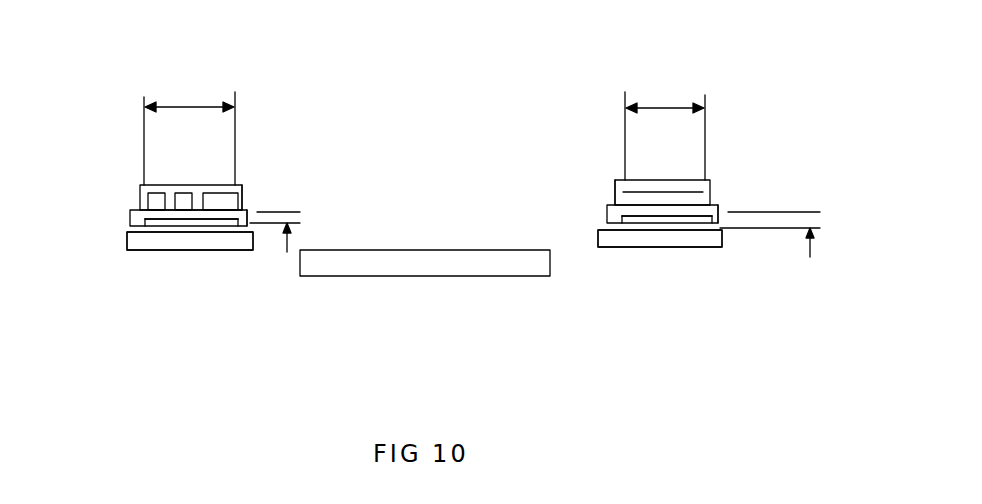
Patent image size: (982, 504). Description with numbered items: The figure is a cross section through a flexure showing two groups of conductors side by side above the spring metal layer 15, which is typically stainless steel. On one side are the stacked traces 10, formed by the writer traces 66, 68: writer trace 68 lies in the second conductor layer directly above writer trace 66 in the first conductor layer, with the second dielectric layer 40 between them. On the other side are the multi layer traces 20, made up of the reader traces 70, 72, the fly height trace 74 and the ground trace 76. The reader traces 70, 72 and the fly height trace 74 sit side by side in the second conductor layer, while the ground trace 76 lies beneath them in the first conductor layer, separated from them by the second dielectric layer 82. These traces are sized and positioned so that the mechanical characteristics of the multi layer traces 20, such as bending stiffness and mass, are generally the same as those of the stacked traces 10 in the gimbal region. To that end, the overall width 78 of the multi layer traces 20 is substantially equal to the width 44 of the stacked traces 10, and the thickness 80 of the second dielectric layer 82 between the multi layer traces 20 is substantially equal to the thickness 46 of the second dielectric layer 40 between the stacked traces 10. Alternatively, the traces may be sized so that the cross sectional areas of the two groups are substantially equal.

The stacked traces 10 is at (686, 224).
The spring metal layer 15 is at (420, 276).
The multi layer traces 20 is at (211, 228).
The second dielectric layer 40 is at (606, 210).
The width 44 is at (665, 108).
The gimbal section thickness 46 is at (810, 212).
The writer trace 66 is at (662, 212).
The writer trace 68 is at (677, 193).
The reader trace 70 is at (156, 185).
The reader trace 72 is at (183, 185).
The fly height trace 74 is at (218, 185).
The ground trace 76 is at (168, 217).
The overall width 78 is at (190, 107).
The thickness 80 is at (296, 213).
The second dielectric layer 82 is at (135, 212).